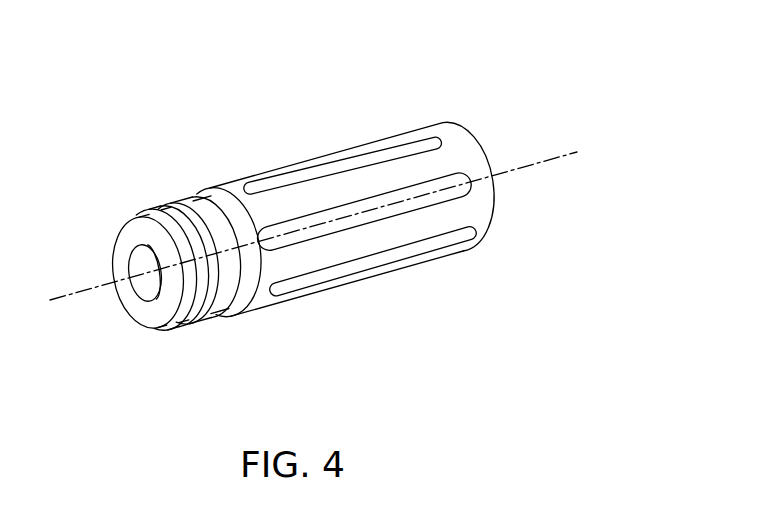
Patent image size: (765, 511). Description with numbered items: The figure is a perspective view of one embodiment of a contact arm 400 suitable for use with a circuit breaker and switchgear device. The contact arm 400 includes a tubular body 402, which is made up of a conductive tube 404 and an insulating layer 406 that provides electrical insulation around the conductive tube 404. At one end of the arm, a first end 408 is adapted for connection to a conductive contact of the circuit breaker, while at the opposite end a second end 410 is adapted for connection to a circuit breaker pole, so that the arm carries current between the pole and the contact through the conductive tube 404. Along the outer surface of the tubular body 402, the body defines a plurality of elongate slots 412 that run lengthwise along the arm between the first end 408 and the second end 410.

The contact arm 400 is at (539, 43).
The tubular body 402 is at (208, 322).
The conductive tube 404 is at (190, 203).
The insulating layer 406 is at (297, 175).
The first end 408 is at (127, 308).
The second end 410 is at (485, 153).
The elongate slots 412 is at (393, 195).